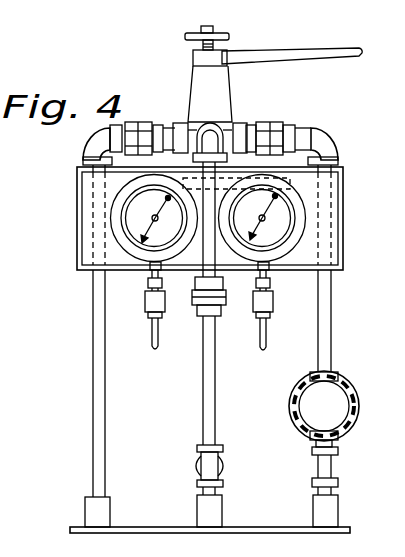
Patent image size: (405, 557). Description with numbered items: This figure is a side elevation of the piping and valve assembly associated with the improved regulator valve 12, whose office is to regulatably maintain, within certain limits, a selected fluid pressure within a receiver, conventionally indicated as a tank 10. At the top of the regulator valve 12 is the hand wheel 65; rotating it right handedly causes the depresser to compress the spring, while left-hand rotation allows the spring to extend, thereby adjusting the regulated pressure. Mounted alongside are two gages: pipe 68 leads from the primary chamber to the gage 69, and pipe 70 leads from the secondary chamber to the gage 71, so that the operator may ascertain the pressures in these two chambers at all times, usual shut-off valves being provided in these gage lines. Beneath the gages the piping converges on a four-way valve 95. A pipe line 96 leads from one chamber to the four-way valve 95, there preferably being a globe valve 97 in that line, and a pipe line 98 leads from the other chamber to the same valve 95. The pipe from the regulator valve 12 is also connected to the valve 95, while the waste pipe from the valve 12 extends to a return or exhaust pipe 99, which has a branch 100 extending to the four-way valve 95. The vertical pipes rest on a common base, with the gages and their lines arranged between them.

The tank 10 is at (241, 207).
The regulator valve 12 is at (188, 95).
The hand wheel 65 is at (192, 28).
The four-way valve 95 is at (218, 92).
The gage 71 is at (135, 226).
The gage 69 is at (285, 226).
The pipe 70 is at (152, 332).
The pipe 68 is at (294, 322).
The pipe line 98 is at (95, 327).
The branch 100 is at (210, 244).
The return or exhaust pipe 99 is at (217, 407).
The pipe line 96 is at (325, 292).
The globe valve 97 is at (325, 398).